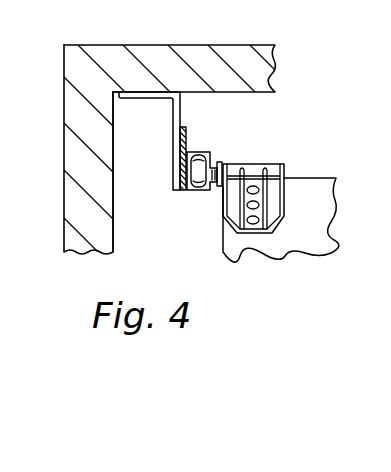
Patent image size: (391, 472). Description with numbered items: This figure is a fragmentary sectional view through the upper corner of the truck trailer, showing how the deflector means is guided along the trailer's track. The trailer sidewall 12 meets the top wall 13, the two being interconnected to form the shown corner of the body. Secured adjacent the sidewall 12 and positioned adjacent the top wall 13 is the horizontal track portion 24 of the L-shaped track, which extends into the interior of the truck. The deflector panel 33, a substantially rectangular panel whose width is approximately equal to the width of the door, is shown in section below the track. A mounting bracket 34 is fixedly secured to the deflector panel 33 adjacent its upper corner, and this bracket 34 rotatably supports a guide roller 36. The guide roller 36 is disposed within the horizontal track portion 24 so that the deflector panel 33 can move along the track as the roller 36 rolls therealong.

The sidewall 12 is at (76, 107).
The top wall 13 is at (193, 52).
The horizontal track portion 24 is at (194, 191).
The deflector panel 33 is at (308, 238).
The mounting bracket 34 is at (262, 193).
The guide roller 36 is at (206, 163).